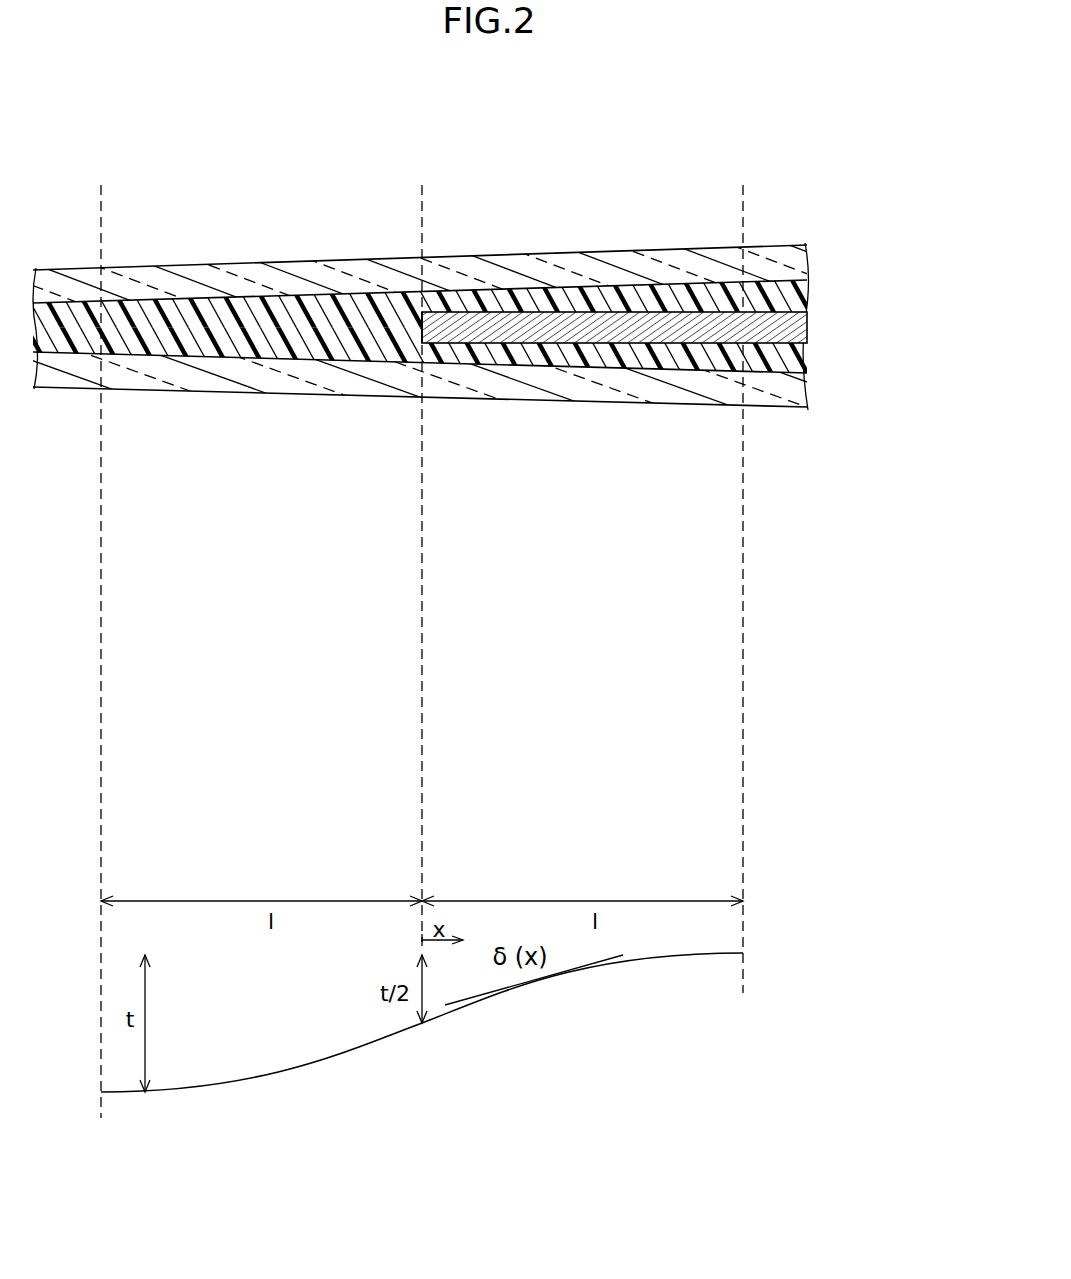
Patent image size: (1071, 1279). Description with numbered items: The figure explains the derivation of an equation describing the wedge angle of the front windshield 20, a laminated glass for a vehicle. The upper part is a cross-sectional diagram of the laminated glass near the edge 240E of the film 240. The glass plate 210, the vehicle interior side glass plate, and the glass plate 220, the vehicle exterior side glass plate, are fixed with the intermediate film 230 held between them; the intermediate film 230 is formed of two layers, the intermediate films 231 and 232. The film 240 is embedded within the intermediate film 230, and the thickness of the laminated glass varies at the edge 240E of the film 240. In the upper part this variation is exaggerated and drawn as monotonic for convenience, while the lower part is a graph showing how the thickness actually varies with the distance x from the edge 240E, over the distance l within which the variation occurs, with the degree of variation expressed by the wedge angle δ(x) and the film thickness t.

The front windshield 20 is at (780, 214).
The glass plate 210 is at (795, 400).
The glass plate 220 is at (790, 263).
The intermediate film 230 is at (475, 283).
The intermediate film 231 is at (793, 362).
The intermediate film 232 is at (790, 302).
The film 240 is at (597, 311).
The edge of the film 240E is at (400, 311).